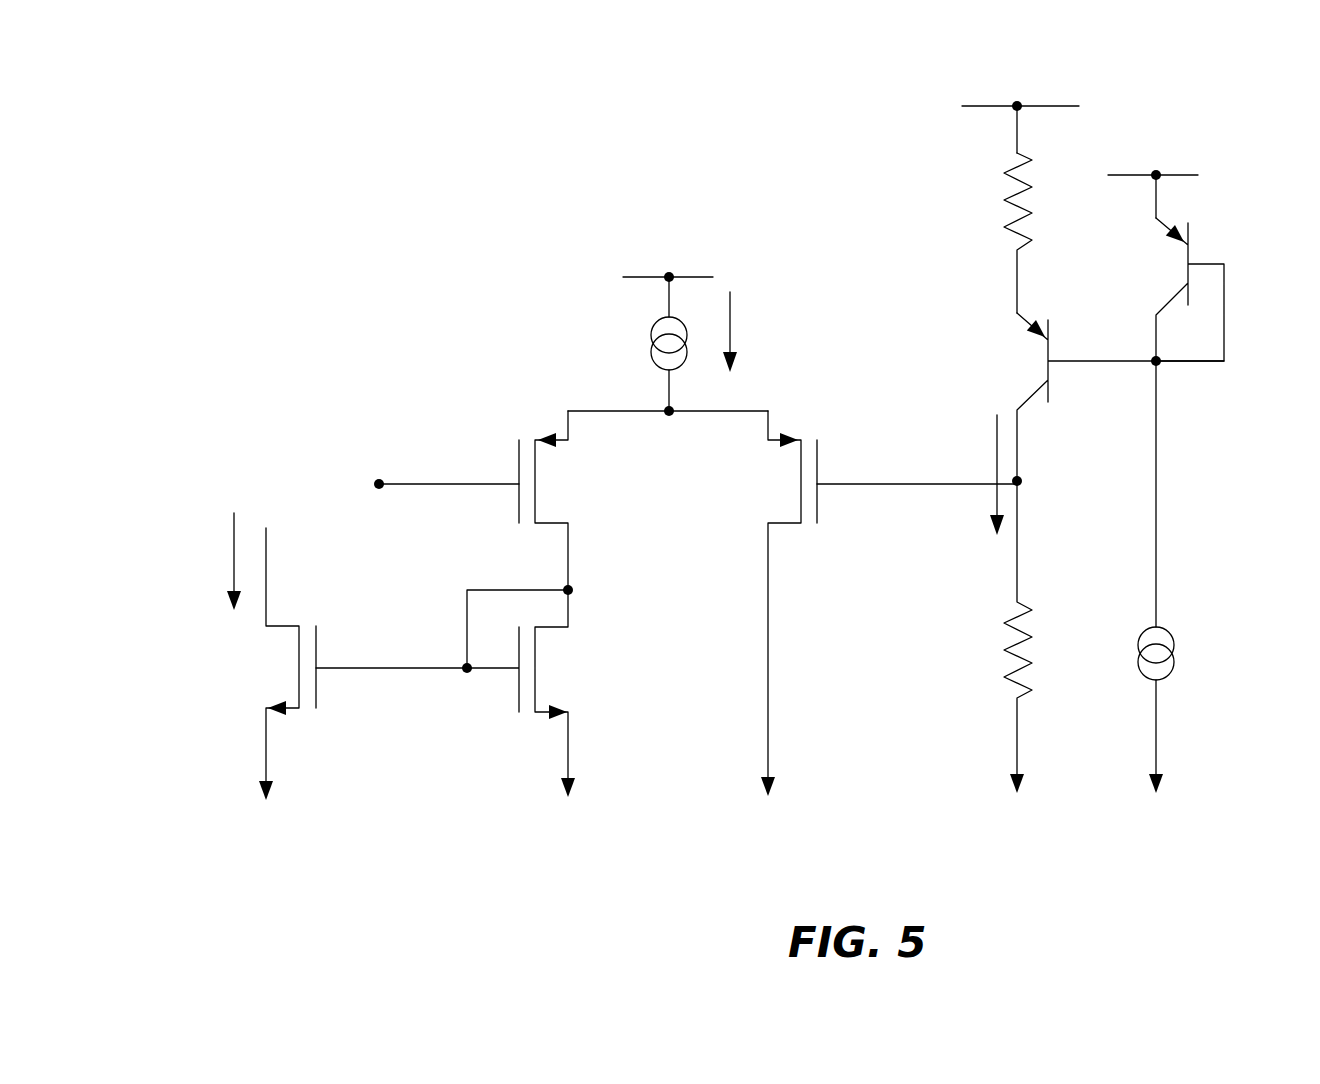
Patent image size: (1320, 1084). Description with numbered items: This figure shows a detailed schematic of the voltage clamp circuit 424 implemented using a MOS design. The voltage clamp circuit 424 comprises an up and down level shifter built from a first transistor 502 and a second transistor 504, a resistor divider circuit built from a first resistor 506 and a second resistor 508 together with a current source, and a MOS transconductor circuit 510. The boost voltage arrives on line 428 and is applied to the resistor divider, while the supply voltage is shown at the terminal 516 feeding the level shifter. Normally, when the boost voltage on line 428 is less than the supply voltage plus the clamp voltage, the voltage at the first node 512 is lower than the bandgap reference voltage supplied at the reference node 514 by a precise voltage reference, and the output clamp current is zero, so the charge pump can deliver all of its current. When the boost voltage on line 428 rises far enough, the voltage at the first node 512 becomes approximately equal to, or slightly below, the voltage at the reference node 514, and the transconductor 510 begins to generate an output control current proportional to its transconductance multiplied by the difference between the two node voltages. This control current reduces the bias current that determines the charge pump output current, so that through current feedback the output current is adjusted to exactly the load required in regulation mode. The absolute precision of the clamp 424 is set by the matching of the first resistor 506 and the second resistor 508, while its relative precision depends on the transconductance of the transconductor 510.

The voltage clamp circuit 424 is at (733, 488).
The line 428 is at (992, 107).
The transistor Q1 502 is at (1063, 382).
The transistor Q2 504 is at (1205, 234).
The resistor RA 506 is at (990, 197).
The resistor RB 508 is at (992, 643).
The MOS transconductor circuit 510 is at (662, 738).
The node V1 512 is at (1069, 492).
The node Vbg 514 is at (356, 479).
The voltage node VM 516 is at (1212, 173).